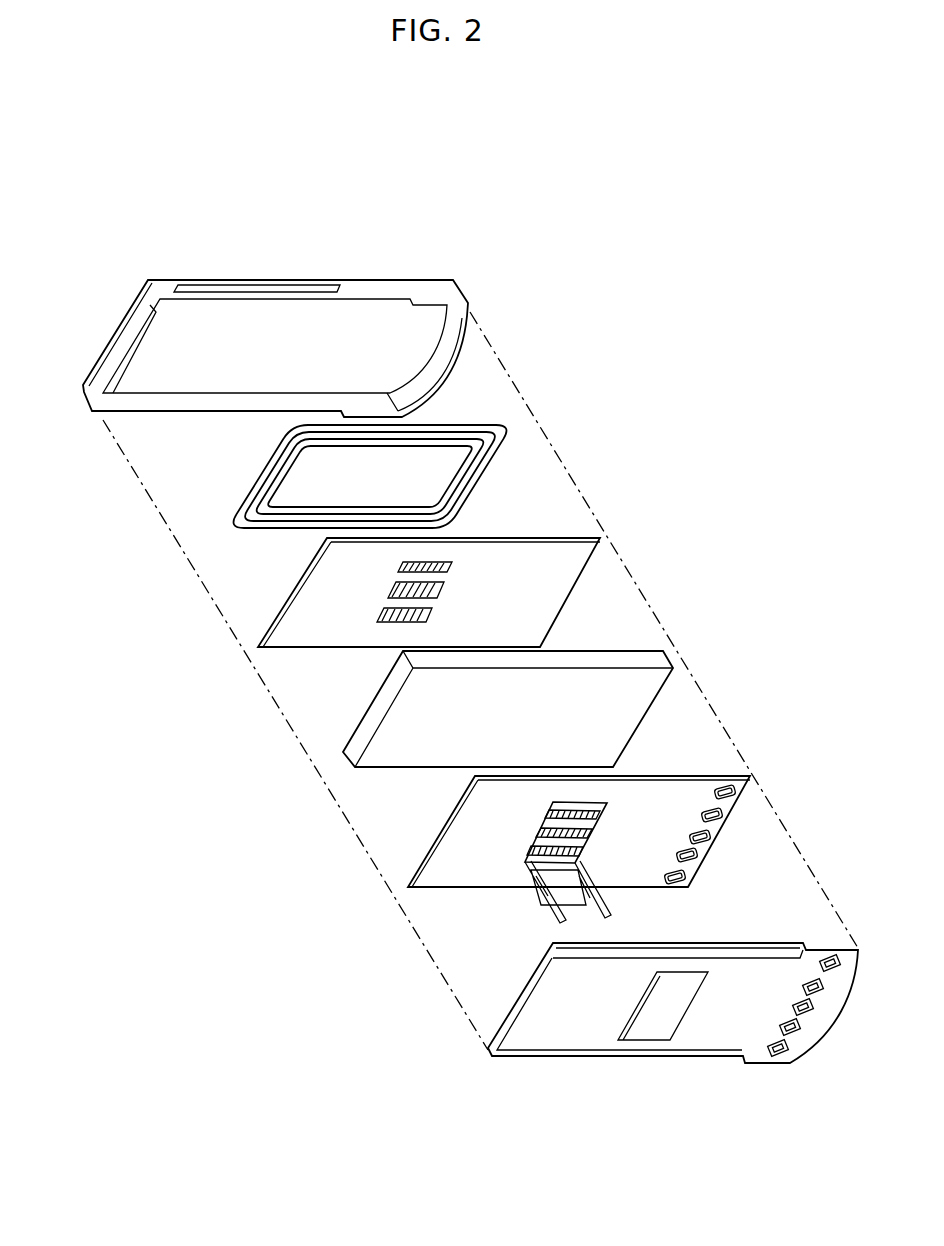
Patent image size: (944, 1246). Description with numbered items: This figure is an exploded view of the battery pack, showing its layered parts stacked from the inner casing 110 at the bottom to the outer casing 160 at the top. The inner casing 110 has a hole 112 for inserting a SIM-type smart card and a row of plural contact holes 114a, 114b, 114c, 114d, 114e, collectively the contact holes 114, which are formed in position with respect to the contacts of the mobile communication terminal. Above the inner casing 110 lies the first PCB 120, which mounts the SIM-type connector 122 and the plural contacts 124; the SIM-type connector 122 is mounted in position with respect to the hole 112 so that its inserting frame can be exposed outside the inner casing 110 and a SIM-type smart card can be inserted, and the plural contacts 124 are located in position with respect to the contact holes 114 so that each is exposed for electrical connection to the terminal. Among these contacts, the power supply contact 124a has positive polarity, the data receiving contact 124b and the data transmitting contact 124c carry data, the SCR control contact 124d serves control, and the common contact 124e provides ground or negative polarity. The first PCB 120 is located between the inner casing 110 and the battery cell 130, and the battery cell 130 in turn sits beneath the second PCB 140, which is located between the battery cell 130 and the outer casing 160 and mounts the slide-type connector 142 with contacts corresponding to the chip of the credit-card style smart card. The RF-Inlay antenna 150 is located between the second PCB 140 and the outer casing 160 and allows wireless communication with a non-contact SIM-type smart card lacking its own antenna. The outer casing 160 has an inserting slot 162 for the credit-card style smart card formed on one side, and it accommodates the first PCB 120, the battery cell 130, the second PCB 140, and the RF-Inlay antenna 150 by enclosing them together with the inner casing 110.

The inner casing 110 is at (522, 1027).
The hole for inserting the SIM-type smart card 112 is at (651, 1032).
The plural contact holes 114 is at (834, 1039).
The contact hole 114a is at (783, 1058).
The contact hole 114b is at (795, 1033).
The contact hole 114c is at (808, 1012).
The contact hole 114d is at (820, 993).
The contact hole 114e is at (857, 986).
The first PCB 120 is at (435, 868).
The SIM-type connector 122 is at (537, 902).
The plural contacts 124 is at (777, 837).
The power supply contact 124a is at (690, 888).
The data receiving contact 124b is at (705, 867).
The data transmitting contact 124c is at (712, 845).
The SCR control contact 124d is at (723, 815).
The common contact 124e is at (762, 772).
The battery cell 130 is at (345, 752).
The second PCB 140 is at (285, 630).
The ID-1 type connector 142 is at (448, 578).
The RF-Inlay antenna 150 is at (240, 516).
The outer casing 160 is at (92, 388).
The inserting slot 162 is at (231, 288).